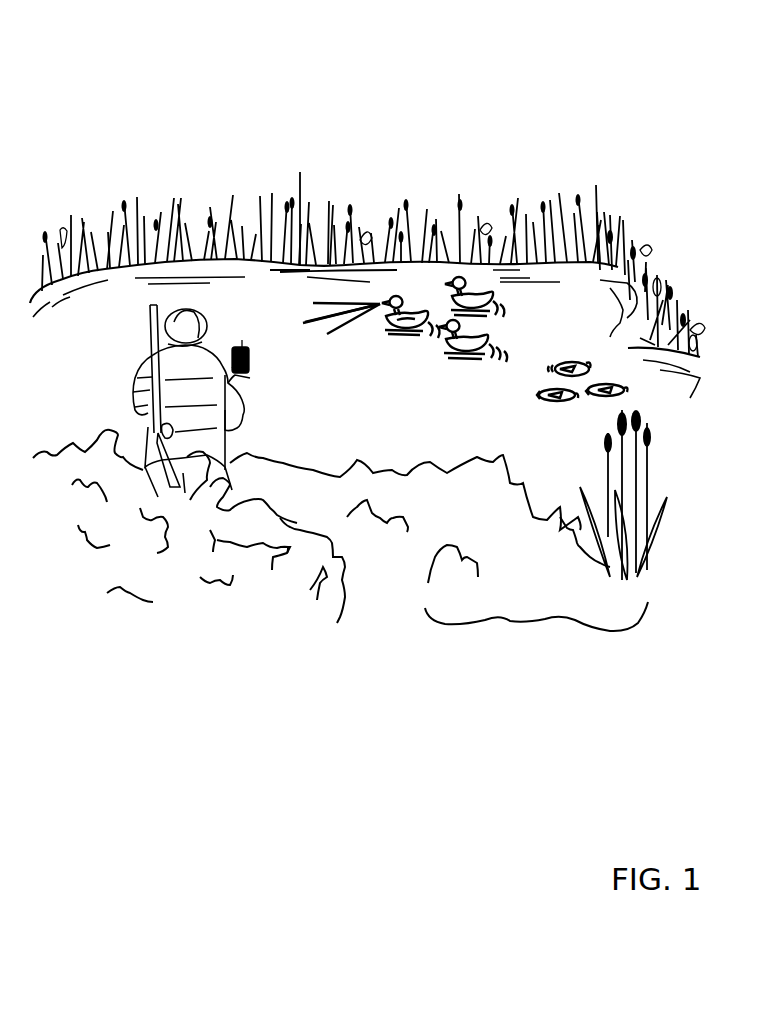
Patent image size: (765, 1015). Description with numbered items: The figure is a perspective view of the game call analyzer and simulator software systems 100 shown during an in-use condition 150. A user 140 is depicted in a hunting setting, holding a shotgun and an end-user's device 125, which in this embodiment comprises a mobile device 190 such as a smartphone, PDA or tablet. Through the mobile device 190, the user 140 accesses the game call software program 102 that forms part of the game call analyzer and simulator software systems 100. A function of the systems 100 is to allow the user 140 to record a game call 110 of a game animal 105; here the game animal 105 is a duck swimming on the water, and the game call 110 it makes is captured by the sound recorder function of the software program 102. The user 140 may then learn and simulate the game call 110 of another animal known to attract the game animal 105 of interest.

The game call analyzer and simulator software systems 100 is at (518, 82).
The game call software program 102 is at (544, 109).
The in-use condition 150 is at (574, 145).
The user 140 is at (204, 370).
The end-user's device 125 is at (242, 348).
The mobile device 190 is at (291, 300).
The game call 110 is at (346, 316).
The game animal 105 is at (404, 328).